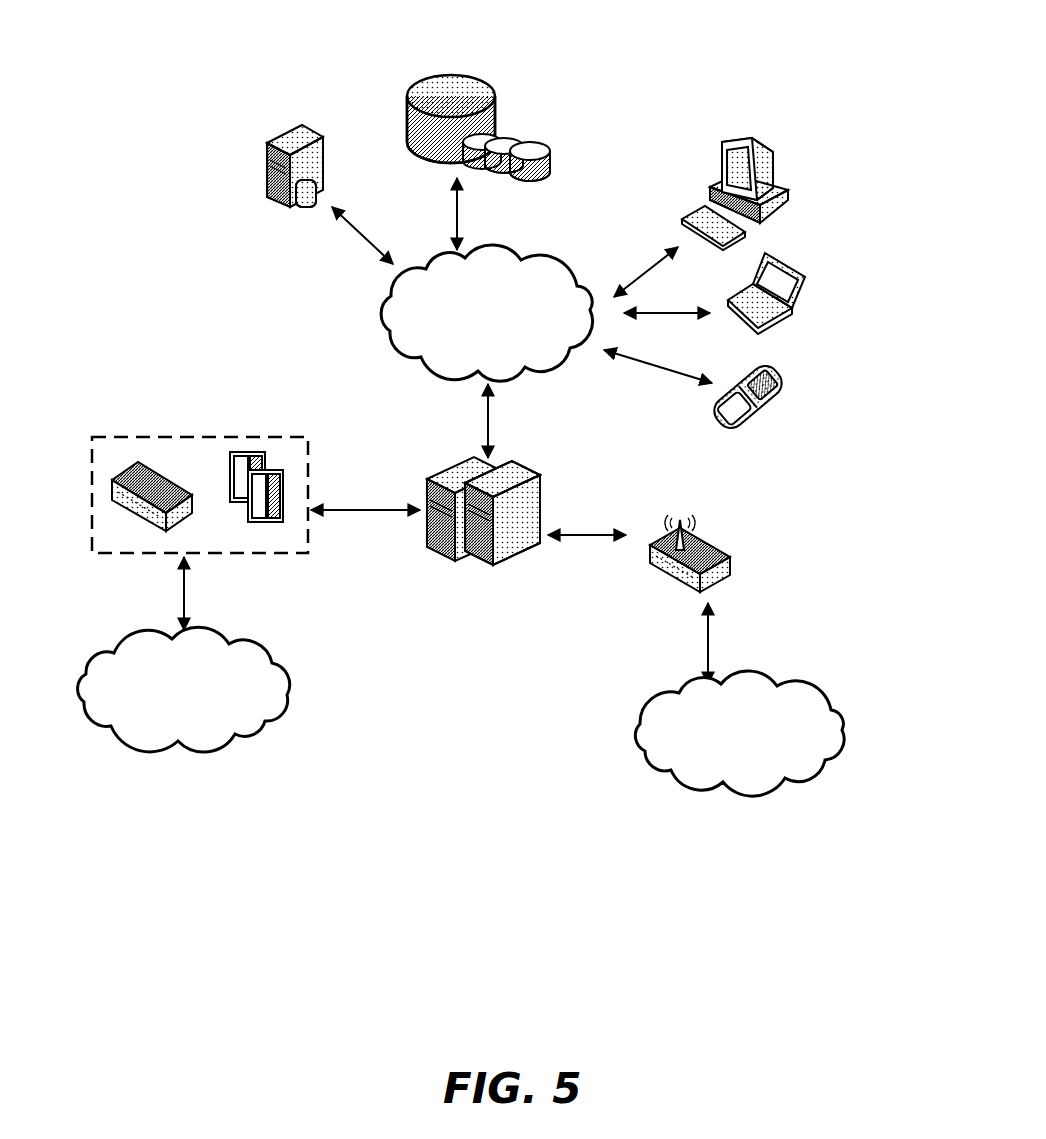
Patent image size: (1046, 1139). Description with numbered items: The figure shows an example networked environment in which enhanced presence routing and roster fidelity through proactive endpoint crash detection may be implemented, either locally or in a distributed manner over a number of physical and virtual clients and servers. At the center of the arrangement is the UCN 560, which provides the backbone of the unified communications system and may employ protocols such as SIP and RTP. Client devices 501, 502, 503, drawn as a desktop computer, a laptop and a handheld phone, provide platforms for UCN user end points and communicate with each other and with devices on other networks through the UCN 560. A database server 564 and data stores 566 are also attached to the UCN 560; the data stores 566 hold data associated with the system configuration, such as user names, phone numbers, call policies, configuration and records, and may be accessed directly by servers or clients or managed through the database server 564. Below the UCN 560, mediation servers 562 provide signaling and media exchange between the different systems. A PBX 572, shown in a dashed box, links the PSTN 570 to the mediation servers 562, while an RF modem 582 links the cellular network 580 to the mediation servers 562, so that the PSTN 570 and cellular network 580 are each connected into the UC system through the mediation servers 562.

The client device 501 is at (775, 128).
The client device 502 is at (807, 252).
The client device 503 is at (779, 366).
The UCN 560 is at (494, 240).
The mediation server 562 is at (456, 458).
The database server 564 is at (304, 214).
The data stores 566 is at (466, 54).
The PSTN 570 is at (143, 752).
The PBX 572 is at (145, 434).
The cellular network 580 is at (699, 792).
The RF modem 582 is at (686, 496).